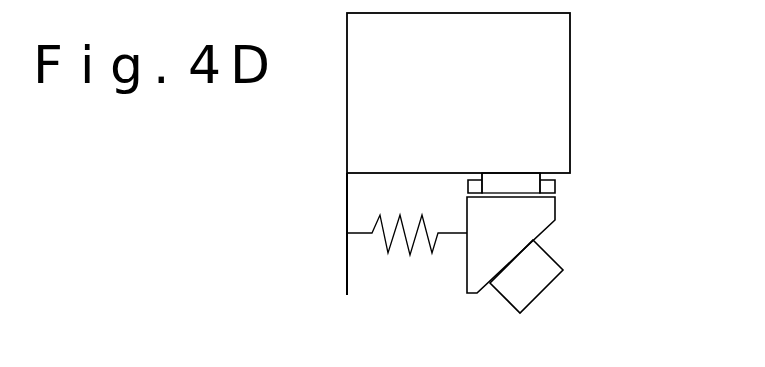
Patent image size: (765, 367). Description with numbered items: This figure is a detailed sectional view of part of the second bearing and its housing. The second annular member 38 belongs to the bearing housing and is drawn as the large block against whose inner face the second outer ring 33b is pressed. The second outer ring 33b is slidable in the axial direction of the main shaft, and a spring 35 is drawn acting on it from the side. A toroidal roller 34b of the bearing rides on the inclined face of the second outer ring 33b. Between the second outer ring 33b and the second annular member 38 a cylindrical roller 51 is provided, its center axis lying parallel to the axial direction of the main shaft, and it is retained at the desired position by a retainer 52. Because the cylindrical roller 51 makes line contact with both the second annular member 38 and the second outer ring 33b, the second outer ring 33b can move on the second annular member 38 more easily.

The second annular member 38 is at (563, 78).
The cylindrical roller 51 is at (520, 182).
The retainer 52 is at (556, 182).
The second outer ring 33b is at (553, 213).
The toroidal roller 34b is at (535, 288).
The spring 35 is at (408, 267).